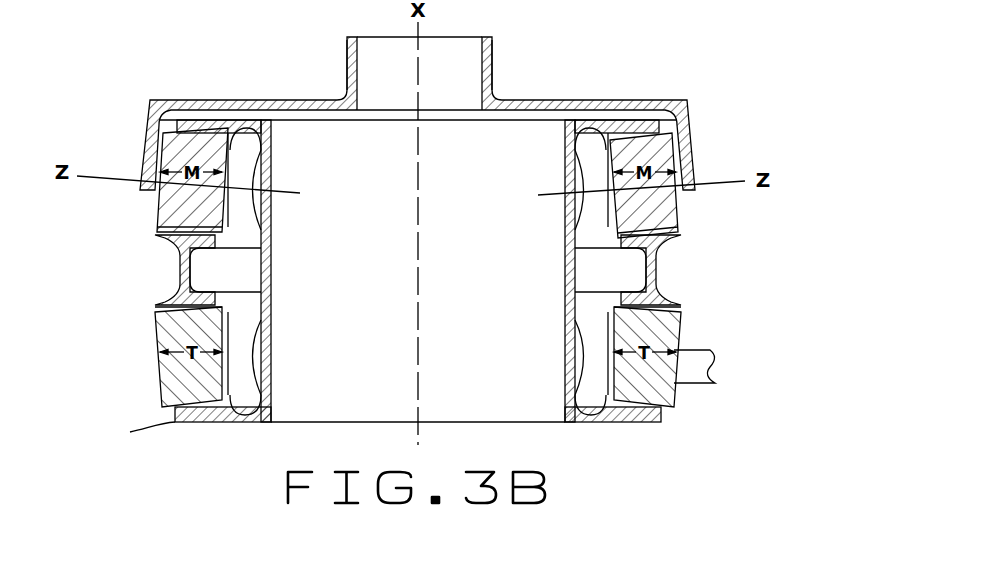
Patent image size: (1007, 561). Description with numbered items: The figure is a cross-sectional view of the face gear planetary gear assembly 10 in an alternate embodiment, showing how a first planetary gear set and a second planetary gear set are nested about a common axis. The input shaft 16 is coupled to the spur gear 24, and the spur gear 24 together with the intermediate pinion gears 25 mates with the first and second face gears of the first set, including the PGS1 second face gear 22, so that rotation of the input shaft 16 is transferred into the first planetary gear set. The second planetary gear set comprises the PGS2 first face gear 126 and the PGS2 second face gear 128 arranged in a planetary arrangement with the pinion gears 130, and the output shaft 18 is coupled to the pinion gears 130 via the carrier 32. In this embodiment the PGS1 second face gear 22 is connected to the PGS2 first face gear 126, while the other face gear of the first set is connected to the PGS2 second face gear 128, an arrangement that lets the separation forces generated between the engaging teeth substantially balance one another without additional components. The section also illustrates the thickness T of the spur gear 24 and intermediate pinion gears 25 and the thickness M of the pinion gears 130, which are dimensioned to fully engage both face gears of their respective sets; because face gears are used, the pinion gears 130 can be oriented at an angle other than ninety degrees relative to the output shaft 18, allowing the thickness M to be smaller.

The face gear planetary gear assembly 10 is at (742, 94).
The input shaft 16 is at (700, 365).
The output shaft 18 is at (492, 78).
The PGS1 second face gear 22 is at (158, 305).
The spur gear 24 is at (178, 420).
The intermediate pinion gears 25 is at (173, 333).
The carrier 32 is at (605, 100).
The PGS2 first face gear 126 is at (166, 100).
The PGS2 second face gear 128 is at (166, 246).
The pinion gears 130 is at (160, 213).